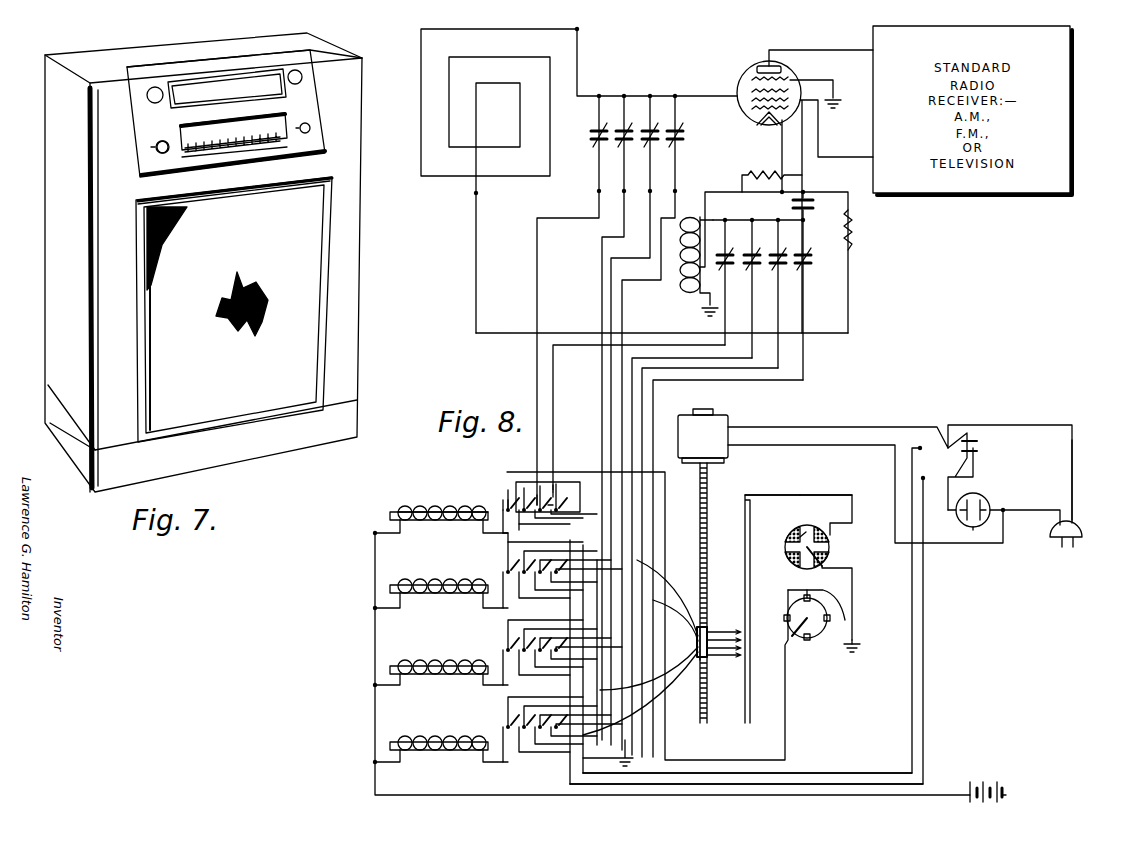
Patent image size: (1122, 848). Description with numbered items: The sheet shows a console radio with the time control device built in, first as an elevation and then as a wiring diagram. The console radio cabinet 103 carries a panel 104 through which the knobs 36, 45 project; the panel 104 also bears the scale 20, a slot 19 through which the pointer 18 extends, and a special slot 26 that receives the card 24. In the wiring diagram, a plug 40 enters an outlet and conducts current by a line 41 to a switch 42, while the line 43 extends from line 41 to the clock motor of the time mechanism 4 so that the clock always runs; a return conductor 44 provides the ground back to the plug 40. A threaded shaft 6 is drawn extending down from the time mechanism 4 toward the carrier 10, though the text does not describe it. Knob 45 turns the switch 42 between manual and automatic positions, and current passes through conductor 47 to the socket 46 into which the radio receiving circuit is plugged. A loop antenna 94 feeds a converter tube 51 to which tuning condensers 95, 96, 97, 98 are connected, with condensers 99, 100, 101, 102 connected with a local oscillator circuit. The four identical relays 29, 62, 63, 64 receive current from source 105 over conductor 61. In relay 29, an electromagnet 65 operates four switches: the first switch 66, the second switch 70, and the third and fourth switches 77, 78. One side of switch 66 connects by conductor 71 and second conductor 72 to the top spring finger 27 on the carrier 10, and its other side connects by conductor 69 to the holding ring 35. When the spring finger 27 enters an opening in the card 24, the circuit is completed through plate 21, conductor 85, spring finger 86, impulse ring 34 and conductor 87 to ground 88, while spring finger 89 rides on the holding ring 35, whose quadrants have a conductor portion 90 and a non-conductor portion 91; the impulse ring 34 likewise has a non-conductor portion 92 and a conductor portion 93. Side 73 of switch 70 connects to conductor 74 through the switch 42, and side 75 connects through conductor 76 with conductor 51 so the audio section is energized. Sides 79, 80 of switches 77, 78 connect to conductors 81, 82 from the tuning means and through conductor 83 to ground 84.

In FIG. 8, the time mechanism 4 is at (722, 418).
In FIG. 8, the threaded shaft 6 is at (713, 514).
In FIG. 8, the carrier 10 is at (701, 679).
In FIG. 7, the pointer 18 is at (205, 155).
In FIG. 7, the slot 19 is at (283, 152).
In FIG. 7, the scale 20 is at (288, 142).
In FIG. 8, the plate 21 is at (745, 553).
In FIG. 7, the card 24 is at (238, 117).
In FIG. 7, the special slot 26 is at (176, 136).
In FIG. 8, the spring finger 27 is at (716, 632).
In FIG. 8, the relay 29 is at (412, 502).
In FIG. 8, the impulse ring 34 is at (824, 564).
In FIG. 8, the holding ring 35 is at (810, 640).
In FIG. 7, the knob 36 is at (310, 127).
In FIG. 8, the plug 40 is at (1075, 525).
In FIG. 8, the line 41 is at (1074, 450).
In FIG. 8, the switch 42 is at (978, 449).
In FIG. 8, the line 43 is at (800, 427).
In FIG. 8, the return conductor 44 is at (786, 445).
In FIG. 7, the knob 45 is at (158, 148).
In FIG. 8, the socket 46 is at (972, 528).
In FIG. 8, the conductor 47 is at (958, 496).
In FIG. 8, the converter tube 51 is at (790, 68).
In FIG. 8, the conductor 61 is at (375, 620).
In FIG. 8, the relay 62 is at (420, 575).
In FIG. 8, the relay 63 is at (431, 655).
In FIG. 8, the relay 64 is at (431, 730).
In FIG. 8, the electromagnet 65 is at (446, 506).
In FIG. 8, the first switch 66 is at (485, 496).
In FIG. 8, the conductor 69 is at (666, 494).
In FIG. 8, the second switch 70 is at (518, 494).
In FIG. 8, the conductor 71 is at (520, 538).
In FIG. 8, the second conductor 72 is at (697, 628).
In FIG. 8, the side of switch 73 is at (505, 530).
In FIG. 8, the conductor 74 is at (535, 550).
In FIG. 8, the side of switch 75 is at (503, 500).
In FIG. 8, the conductor 76 is at (580, 493).
In FIG. 8, the third switch 77 is at (538, 487).
In FIG. 8, the fourth switch 78 is at (552, 488).
In FIG. 8, the side of switch 79 is at (552, 505).
In FIG. 8, the side of switch 80 is at (554, 496).
In FIG. 8, the conductor 81 is at (540, 322).
In FIG. 8, the conductor 82 is at (726, 318).
In FIG. 8, the conductor 83 is at (594, 667).
In FIG. 8, the ground 84 is at (628, 759).
In FIG. 8, the conductor 85 is at (795, 495).
In FIG. 8, the spring finger 86 is at (830, 517).
In FIG. 8, the conductor 87 is at (855, 569).
In FIG. 8, the ground 88 is at (852, 652).
In FIG. 8, the spring finger 89 is at (855, 616).
In FIG. 8, the conductor portion 90 is at (790, 610).
In FIG. 8, the non-conductor portion 91 is at (803, 598).
In FIG. 8, the non-conductor portion 92 is at (790, 545).
In FIG. 8, the conductor portion 93 is at (799, 537).
In FIG. 8, the loop antenna 94 is at (485, 120).
In FIG. 8, the condenser 95 is at (600, 128).
In FIG. 8, the condenser 96 is at (626, 128).
In FIG. 8, the condenser 97 is at (652, 128).
In FIG. 8, the condenser 98 is at (680, 128).
In FIG. 8, the condenser 99 is at (720, 250).
In FIG. 8, the condenser 100 is at (748, 250).
In FIG. 8, the condenser 101 is at (775, 250).
In FIG. 8, the condenser 102 is at (805, 250).
In FIG. 7, the console radio cabinet 103 is at (350, 70).
In FIG. 7, the panel 104 is at (303, 100).
In FIG. 8, the source 105 is at (1005, 792).